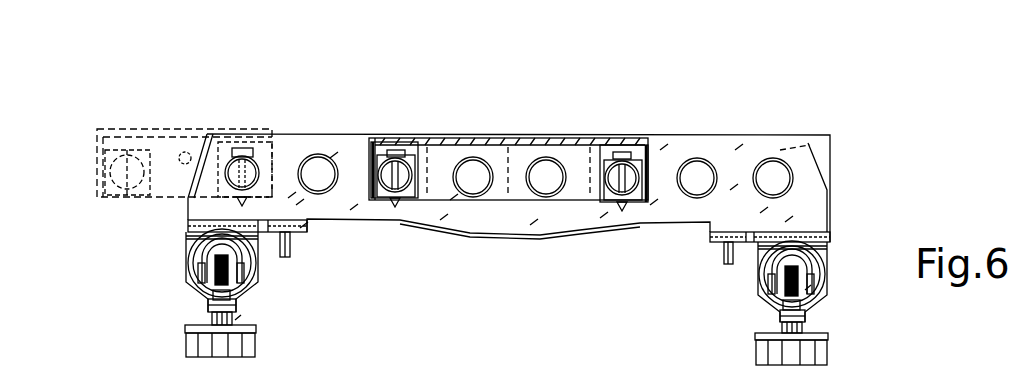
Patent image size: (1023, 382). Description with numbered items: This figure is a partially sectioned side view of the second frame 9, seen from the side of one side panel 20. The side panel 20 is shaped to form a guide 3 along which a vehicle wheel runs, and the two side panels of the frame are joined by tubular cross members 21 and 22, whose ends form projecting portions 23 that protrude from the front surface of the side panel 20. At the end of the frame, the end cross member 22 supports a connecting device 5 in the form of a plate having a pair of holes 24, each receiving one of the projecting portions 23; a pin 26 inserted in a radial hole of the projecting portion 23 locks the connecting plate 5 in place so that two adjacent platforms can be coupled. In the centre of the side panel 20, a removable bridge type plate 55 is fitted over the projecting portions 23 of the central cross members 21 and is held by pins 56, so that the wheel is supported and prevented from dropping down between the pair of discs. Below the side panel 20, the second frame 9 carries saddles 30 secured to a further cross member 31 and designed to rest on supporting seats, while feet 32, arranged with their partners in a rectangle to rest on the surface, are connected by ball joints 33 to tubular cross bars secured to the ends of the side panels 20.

The guide 3 is at (325, 130).
The connecting device 5 is at (157, 122).
The second frame 9 is at (770, 111).
The side panel 20 is at (350, 145).
The cross member 21 is at (405, 168).
The cross member 22 is at (249, 153).
The projecting portion 23 is at (208, 160).
The hole 24 is at (127, 197).
The pin 26 is at (237, 145).
The saddle 30 is at (288, 258).
The cross member 31 is at (300, 234).
The foot 32 is at (253, 353).
The ball joint 33 is at (208, 278).
The bridge type plate 55 is at (525, 158).
The pin 56 is at (380, 150).